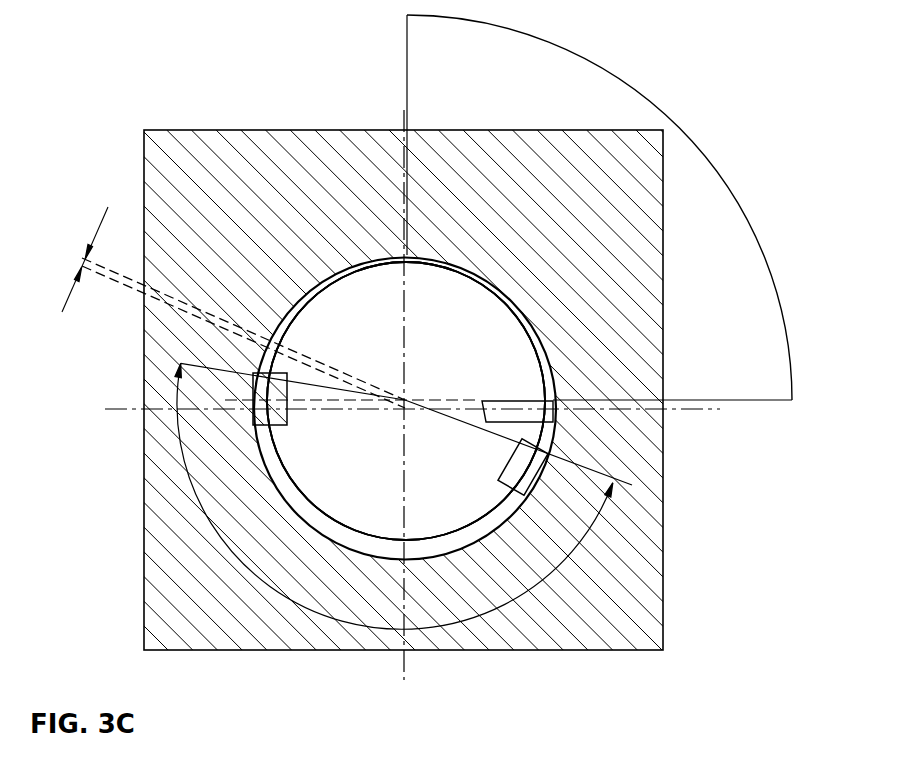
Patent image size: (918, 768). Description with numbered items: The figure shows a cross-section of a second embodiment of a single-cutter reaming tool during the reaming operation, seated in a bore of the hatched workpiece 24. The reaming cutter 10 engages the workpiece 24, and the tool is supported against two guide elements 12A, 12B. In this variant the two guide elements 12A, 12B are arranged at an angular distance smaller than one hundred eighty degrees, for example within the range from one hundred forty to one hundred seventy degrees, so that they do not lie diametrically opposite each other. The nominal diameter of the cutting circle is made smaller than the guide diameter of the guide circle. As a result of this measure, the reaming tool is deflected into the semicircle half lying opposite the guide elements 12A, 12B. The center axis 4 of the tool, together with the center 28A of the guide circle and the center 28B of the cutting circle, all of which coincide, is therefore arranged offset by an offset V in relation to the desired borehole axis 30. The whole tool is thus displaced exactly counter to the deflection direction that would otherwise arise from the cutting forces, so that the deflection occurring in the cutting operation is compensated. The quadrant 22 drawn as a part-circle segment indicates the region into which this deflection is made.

The center axis 4 is at (406, 400).
The center of the guide circle 28A is at (407, 310).
The center of the cutting circle 28B is at (431, 310).
The reaming cutter 10 is at (534, 403).
The guide element 12A is at (535, 458).
The guide element 12B is at (268, 420).
The quadrant 22 is at (613, 78).
The workpiece 24 is at (650, 582).
The borehole axis 30 is at (405, 401).
The offset V is at (84, 259).